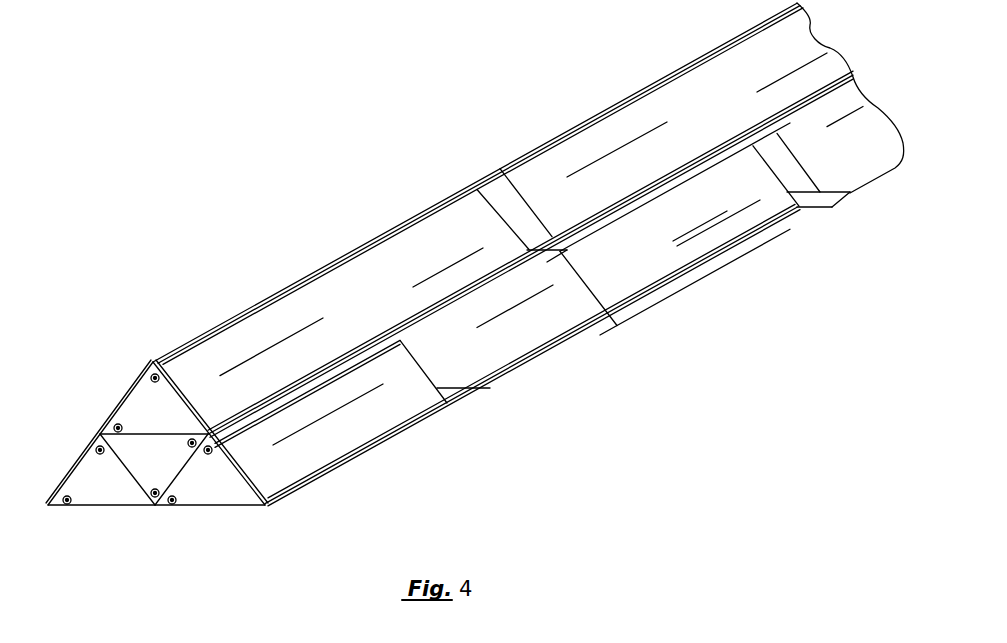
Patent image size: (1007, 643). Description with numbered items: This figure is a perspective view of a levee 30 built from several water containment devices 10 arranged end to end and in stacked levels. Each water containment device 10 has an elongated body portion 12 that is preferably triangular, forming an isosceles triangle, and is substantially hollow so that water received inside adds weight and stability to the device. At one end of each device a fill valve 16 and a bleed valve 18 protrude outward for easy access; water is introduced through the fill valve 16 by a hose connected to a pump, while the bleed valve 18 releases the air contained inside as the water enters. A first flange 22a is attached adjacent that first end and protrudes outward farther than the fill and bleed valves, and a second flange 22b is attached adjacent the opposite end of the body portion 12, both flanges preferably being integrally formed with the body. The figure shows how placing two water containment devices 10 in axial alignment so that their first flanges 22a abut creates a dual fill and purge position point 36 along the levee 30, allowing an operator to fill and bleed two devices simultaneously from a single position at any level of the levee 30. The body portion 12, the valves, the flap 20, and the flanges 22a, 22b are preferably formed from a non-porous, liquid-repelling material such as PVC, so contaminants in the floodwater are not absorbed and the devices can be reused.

The water containment device 10 is at (243, 290).
The body portion 12 is at (590, 122).
The fill valve 16 is at (202, 432).
The bleed valve 18 is at (155, 372).
The flap 20 is at (93, 447).
The first flange 22a is at (762, 173).
The second flange 22b is at (500, 215).
The levee 30 is at (490, 50).
The dual fill and purge position point 36 is at (845, 206).